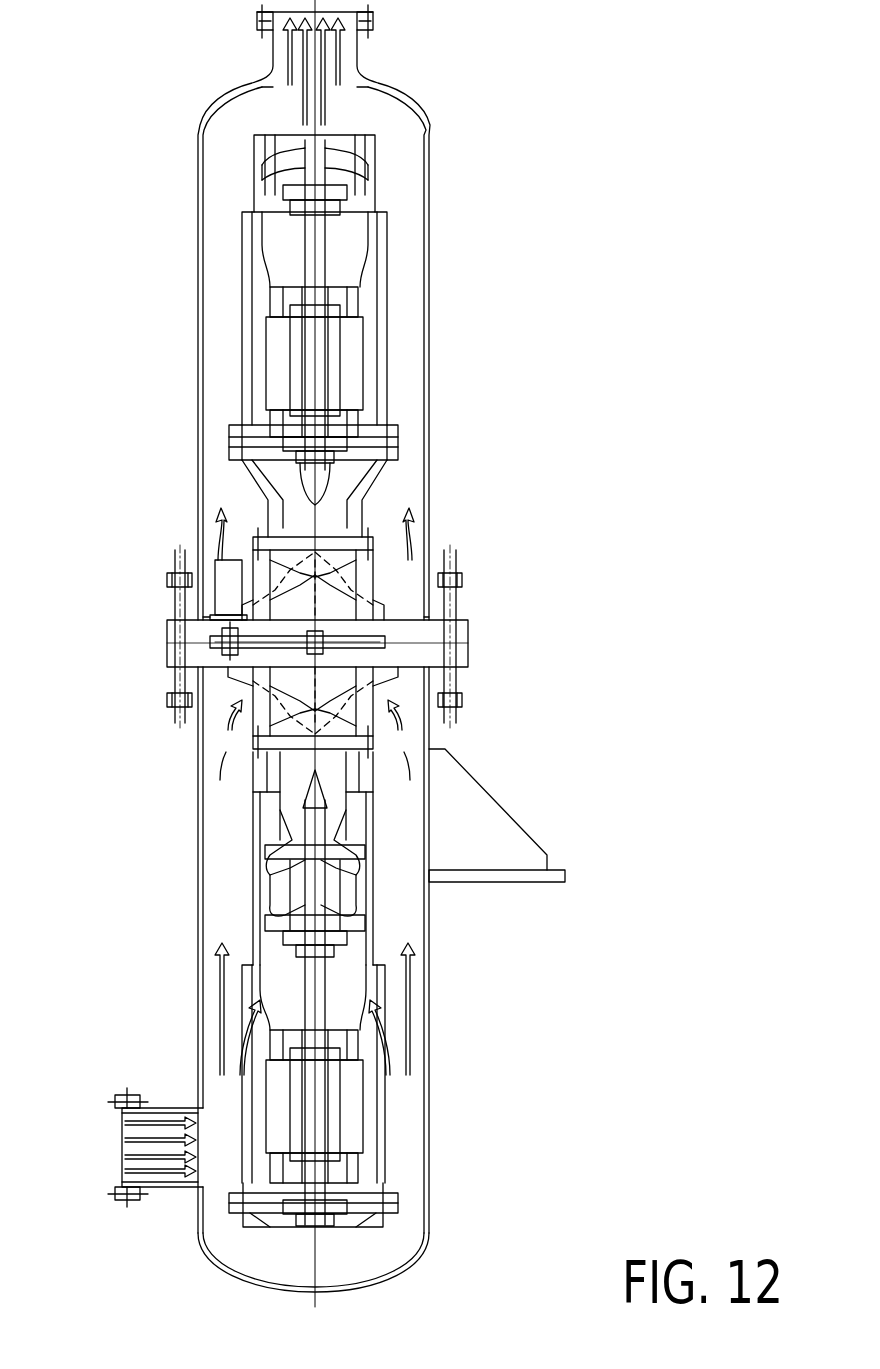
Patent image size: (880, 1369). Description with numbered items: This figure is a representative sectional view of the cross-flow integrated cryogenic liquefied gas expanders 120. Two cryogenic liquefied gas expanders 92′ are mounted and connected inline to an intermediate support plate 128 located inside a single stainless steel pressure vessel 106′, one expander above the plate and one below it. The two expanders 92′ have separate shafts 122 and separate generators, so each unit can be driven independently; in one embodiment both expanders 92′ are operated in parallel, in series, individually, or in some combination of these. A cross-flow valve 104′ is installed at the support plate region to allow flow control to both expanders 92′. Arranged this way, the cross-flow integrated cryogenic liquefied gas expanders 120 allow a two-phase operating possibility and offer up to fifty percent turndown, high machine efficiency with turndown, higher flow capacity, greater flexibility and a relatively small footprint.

The cross-flow integrated cryogenic liquefied gas expanders 120 is at (540, 145).
The shaft 122 is at (327, 347).
The cryogenic liquefied gas expander 92′ is at (243, 352).
The stainless steel pressure vessel 106′ is at (429, 400).
The cross-flow valve 104′ is at (385, 600).
The intermediate support plate 128 is at (462, 638).